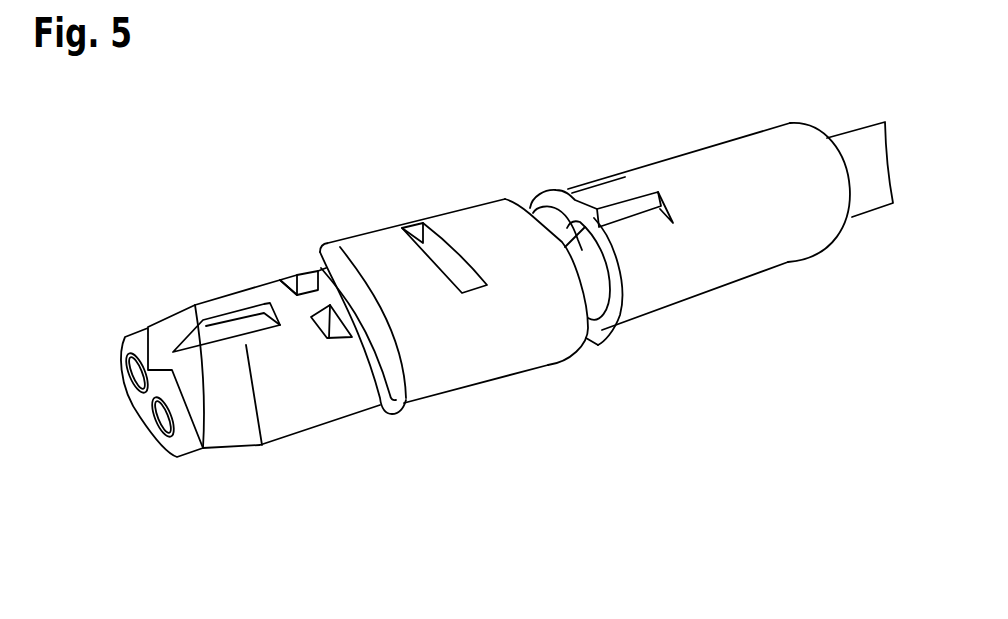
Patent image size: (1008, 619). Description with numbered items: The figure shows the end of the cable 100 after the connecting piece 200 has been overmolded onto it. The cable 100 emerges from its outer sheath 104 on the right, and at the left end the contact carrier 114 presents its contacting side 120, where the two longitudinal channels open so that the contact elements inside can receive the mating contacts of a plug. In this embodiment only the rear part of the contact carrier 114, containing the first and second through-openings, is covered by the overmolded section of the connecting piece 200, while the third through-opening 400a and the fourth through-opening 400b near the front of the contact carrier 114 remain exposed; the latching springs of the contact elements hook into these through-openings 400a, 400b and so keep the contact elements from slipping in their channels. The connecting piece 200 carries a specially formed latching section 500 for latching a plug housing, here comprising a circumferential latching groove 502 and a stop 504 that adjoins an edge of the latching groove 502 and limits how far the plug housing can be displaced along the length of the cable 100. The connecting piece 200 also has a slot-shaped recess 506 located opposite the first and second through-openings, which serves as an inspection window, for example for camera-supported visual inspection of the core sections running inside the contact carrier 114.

The cable 100 is at (357, 122).
The outer sheath 104 is at (855, 128).
The contact carrier 114 is at (180, 308).
The contacting side 120 is at (114, 345).
The connecting piece 200 is at (741, 138).
The third through-opening 400a is at (312, 272).
The fourth through-opening 400b is at (329, 339).
The latching section 500 is at (653, 153).
The latching groove 502 is at (601, 348).
The stop 504 is at (590, 260).
The slot-shaped recess 506 is at (462, 258).